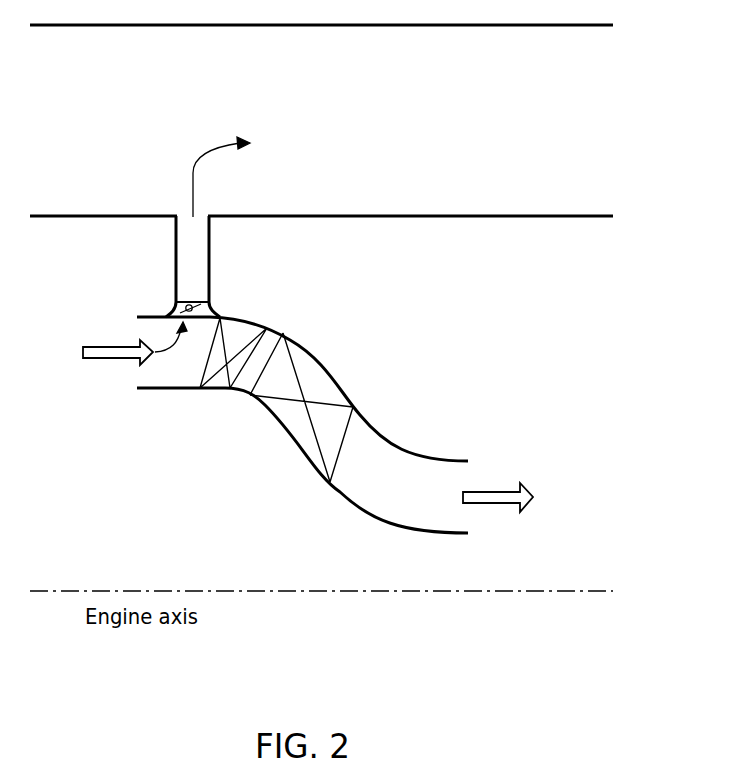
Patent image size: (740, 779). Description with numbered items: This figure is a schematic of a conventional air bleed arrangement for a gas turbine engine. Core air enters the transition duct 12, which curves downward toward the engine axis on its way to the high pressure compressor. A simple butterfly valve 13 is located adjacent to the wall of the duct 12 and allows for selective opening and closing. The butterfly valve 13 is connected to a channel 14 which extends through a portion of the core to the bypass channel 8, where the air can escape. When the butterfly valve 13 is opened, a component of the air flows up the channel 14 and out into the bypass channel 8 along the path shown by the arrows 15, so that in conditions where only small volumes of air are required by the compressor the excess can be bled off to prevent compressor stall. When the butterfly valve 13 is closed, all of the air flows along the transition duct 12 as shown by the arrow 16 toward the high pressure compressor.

The bypass channel 8 is at (597, 103).
The duct 12 is at (272, 337).
The butterfly valve 13 is at (207, 312).
The channel 14 is at (210, 262).
The arrows 15 is at (199, 166).
The arrow 16 is at (500, 488).